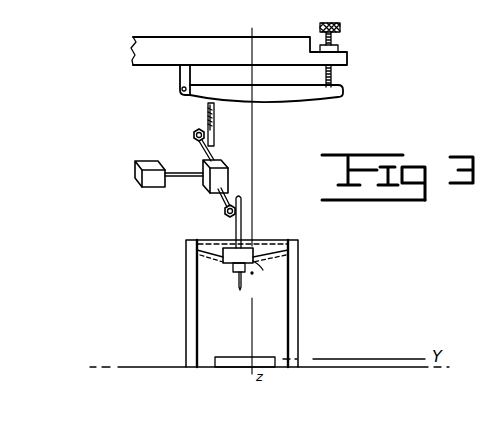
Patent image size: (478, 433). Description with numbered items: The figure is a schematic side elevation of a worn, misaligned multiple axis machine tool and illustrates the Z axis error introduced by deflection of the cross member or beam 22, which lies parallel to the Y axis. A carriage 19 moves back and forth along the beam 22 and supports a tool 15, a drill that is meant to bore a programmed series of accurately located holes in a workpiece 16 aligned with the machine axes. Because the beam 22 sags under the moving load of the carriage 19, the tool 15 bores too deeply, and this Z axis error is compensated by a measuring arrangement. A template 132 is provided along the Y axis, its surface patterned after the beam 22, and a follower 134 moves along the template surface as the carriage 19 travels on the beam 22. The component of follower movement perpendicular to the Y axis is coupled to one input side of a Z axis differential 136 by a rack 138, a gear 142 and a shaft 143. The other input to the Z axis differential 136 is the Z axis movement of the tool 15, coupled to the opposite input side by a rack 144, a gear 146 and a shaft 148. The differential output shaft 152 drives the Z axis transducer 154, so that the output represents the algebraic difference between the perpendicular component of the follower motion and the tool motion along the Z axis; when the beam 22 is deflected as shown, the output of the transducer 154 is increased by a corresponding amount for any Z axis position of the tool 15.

The template 132 is at (343, 95).
The follower 134 is at (207, 104).
The rack 138 is at (216, 138).
The gear 142 is at (193, 129).
The shaft 143 is at (206, 153).
The Z axis differential 136 is at (228, 170).
The Z axis transducer 154 is at (136, 161).
The differential output shaft 152 is at (182, 184).
The shaft 148 is at (222, 198).
The gear 146 is at (227, 216).
The rack 144 is at (243, 212).
The cross member 22 is at (299, 241).
The carriage 19 is at (256, 263).
The tool 15 is at (236, 288).
The workpiece 16 is at (256, 357).